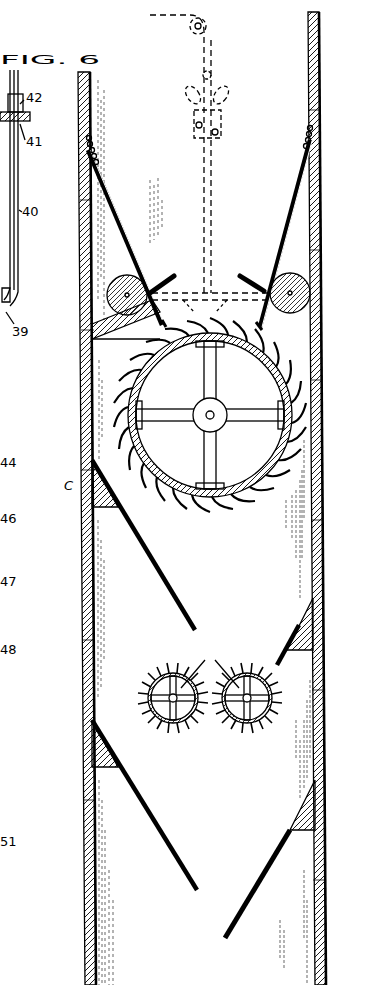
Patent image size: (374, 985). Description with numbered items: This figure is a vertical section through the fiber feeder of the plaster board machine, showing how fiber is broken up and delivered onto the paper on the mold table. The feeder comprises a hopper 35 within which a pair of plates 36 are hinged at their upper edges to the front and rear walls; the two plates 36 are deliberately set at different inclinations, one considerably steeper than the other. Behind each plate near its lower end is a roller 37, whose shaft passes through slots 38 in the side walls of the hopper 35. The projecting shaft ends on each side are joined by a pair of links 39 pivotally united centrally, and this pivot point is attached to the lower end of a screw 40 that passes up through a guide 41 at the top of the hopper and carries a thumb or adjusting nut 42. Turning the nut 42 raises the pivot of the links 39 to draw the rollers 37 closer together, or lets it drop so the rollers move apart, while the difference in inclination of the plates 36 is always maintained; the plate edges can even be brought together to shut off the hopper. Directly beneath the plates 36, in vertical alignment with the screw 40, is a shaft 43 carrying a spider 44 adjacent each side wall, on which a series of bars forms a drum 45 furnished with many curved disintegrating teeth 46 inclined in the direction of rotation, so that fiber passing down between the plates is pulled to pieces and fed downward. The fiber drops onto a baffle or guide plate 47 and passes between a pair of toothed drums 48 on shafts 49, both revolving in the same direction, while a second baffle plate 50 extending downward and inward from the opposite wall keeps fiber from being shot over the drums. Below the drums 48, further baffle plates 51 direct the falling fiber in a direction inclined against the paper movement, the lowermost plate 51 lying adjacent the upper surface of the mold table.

The hopper 35 is at (320, 101).
The plates 36 is at (123, 227).
The roller 37 is at (110, 296).
The slots 38 is at (168, 280).
The links 39 is at (205, 309).
The screws 40 is at (213, 216).
The guides 41 is at (222, 120).
The thumb or adjusting nuts 42 is at (229, 96).
The shaft 43 is at (214, 412).
The spider 44 is at (207, 457).
The drum 45 is at (170, 497).
The curved disintegrating teeth 46 is at (215, 506).
The baffle or guide plate 47 is at (164, 582).
The toothed drums 48 is at (168, 730).
The shafts 49 is at (210, 666).
The second baffle plate 50 is at (301, 624).
The baffle plates 51 is at (280, 840).